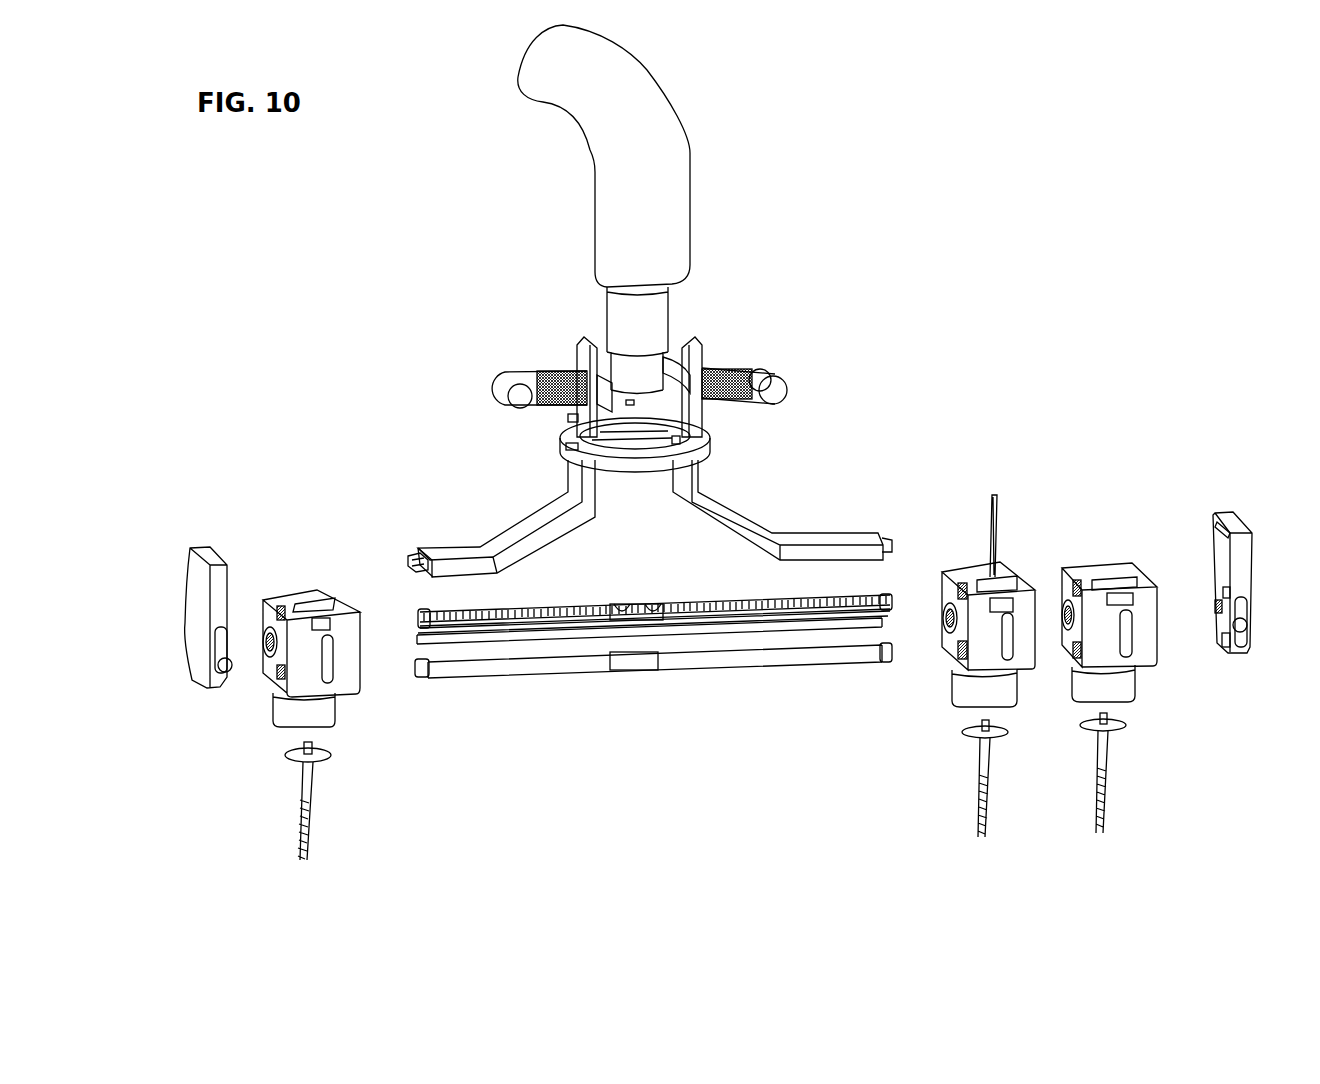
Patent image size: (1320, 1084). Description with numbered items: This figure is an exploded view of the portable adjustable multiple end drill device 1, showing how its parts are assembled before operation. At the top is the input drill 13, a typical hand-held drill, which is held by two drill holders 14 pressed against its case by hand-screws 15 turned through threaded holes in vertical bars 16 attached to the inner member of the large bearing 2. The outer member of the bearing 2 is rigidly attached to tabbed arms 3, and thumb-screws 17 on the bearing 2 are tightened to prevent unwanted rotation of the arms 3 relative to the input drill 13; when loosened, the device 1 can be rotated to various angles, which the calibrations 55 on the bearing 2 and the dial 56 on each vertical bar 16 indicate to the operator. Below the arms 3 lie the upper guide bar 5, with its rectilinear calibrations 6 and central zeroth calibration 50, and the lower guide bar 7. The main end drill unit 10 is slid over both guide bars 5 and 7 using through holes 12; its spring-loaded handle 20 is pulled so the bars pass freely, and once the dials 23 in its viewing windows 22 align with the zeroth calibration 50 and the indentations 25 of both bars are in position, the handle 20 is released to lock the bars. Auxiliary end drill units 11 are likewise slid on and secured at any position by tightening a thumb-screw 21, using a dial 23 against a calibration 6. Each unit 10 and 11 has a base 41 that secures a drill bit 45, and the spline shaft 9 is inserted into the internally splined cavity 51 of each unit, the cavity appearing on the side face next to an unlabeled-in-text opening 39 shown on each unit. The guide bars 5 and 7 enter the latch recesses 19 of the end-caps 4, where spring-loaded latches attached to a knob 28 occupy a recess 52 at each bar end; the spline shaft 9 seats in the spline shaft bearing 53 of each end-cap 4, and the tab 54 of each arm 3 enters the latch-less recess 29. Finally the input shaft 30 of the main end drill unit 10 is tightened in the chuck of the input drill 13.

The portable adjustable multiple end drill device 1 is at (304, 355).
The large bearing 2 is at (708, 444).
The tabbed arm 3 is at (457, 552).
The end-cap 4 is at (190, 578).
The upper guide bar 5 is at (548, 608).
The rectilinear calibrations 6 is at (577, 604).
The lower guide bar 7 is at (512, 668).
The spline shaft 9 is at (417, 642).
The main end drill unit 10 is at (1025, 667).
The auxiliary end drill unit 11 is at (343, 640).
The through holes 12 is at (278, 620).
The input drill 13 is at (662, 218).
The drill holder 14 is at (610, 397).
The hand-screw 15 is at (498, 388).
The vertical bar 16 is at (587, 352).
The thumb-screw 17 is at (634, 403).
The recess 19 is at (1225, 588).
The handle 20 is at (1007, 647).
The thumb-screw 21 is at (325, 660).
The viewing window 22 is at (330, 618).
The dial 23 is at (310, 605).
The indentations 25 is at (622, 605).
The knob 28 is at (225, 665).
The latch-less recess 29 is at (1218, 528).
The input shaft 30 is at (998, 502).
The hole 39 is at (263, 632).
The base 41 is at (325, 708).
The drill bit 45 is at (310, 782).
The zeroth calibration 50 is at (636, 603).
The internally splined cavity 51 is at (265, 647).
The recess 52 is at (428, 608).
The spline shaft bearing 53 is at (1217, 603).
The tab 54 is at (413, 555).
The calibrations 55 is at (570, 447).
The dial 56 is at (573, 418).